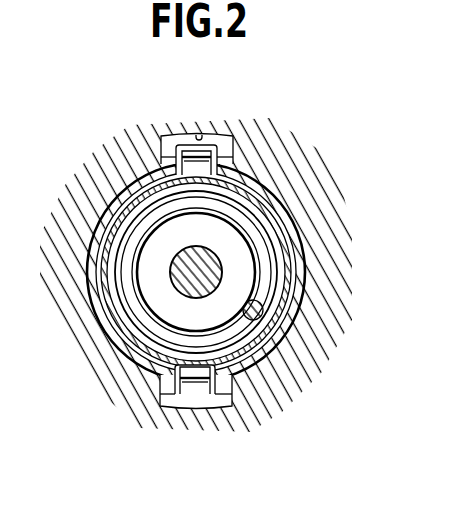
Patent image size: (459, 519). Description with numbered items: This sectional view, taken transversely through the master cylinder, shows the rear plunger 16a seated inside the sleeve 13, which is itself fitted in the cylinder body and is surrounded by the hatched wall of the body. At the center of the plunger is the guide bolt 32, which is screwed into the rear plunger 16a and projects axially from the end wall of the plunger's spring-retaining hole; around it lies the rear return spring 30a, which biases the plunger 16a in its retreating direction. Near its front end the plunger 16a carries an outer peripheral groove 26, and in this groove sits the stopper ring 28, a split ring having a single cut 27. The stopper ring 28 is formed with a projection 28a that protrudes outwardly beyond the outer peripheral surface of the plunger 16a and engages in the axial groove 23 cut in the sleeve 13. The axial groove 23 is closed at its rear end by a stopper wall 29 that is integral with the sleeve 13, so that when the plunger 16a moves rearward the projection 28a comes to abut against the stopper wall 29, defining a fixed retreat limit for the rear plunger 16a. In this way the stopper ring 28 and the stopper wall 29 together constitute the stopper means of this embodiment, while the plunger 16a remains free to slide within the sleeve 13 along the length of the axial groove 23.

The sleeve 13 is at (300, 174).
The rear plunger 16a is at (274, 321).
The axial groove 23 is at (199, 135).
The outer peripheral groove 26 is at (286, 206).
The single cut 27 is at (198, 398).
The stopper ring 28 is at (290, 264).
The projection 28a is at (218, 138).
The stopper wall 29 is at (172, 137).
The rear return spring 30a is at (249, 302).
The guide bolt 32 is at (196, 246).